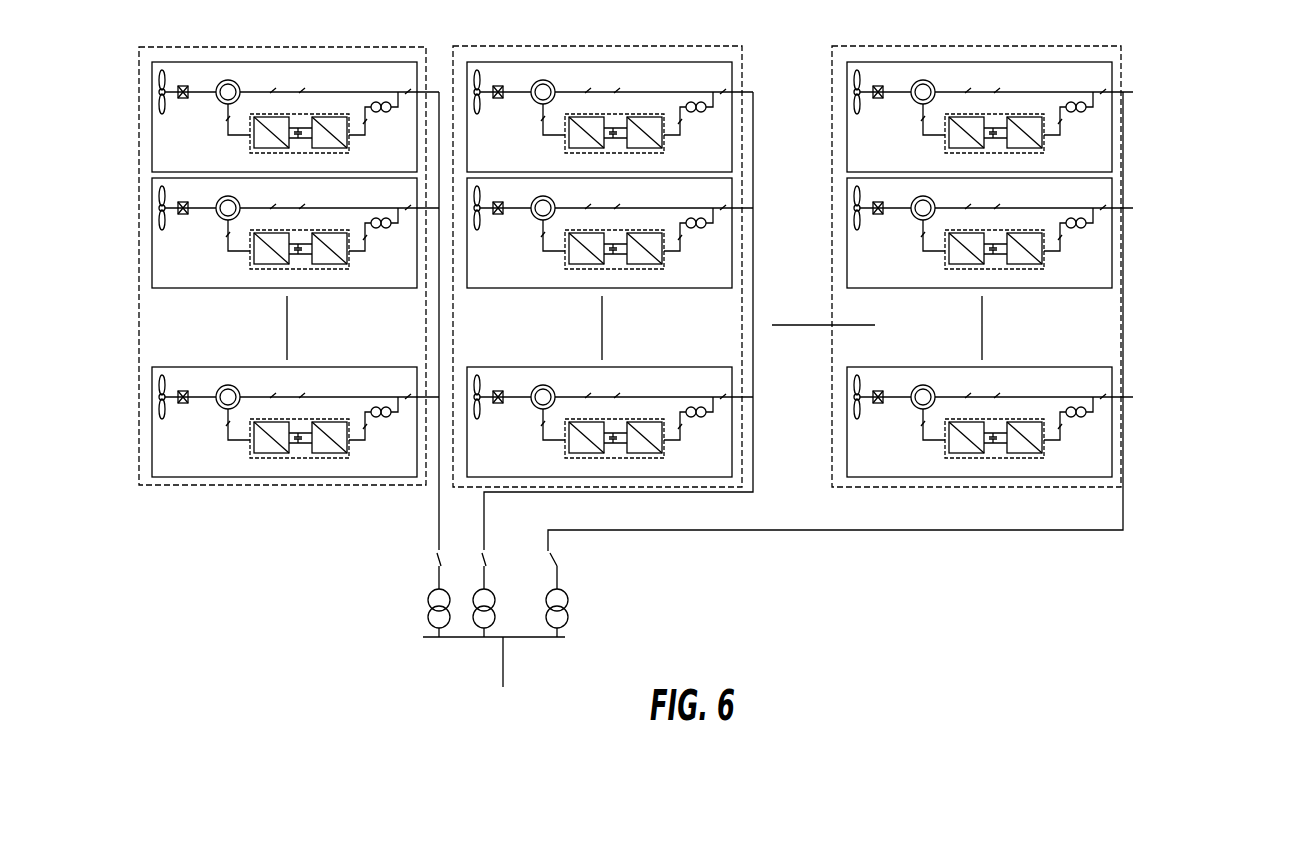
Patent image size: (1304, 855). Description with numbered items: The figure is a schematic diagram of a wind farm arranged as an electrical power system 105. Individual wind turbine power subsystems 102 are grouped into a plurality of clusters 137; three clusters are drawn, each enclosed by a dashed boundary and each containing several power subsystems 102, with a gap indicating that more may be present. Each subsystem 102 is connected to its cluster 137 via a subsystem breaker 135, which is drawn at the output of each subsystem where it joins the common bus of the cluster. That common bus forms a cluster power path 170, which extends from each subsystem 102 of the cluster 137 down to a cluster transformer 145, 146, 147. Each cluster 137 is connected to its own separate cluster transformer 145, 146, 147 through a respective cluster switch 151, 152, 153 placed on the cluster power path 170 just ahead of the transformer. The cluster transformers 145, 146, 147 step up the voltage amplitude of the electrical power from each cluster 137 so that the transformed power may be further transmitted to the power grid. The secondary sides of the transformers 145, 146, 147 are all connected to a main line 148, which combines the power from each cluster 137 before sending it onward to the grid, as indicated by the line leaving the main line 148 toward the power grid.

The electrical power system 105 is at (1212, 128).
The power subsystem 102 is at (152, 133).
The subsystem breaker 135 is at (409, 90).
The cluster 137 is at (138, 192).
The cluster power path 170 is at (440, 311).
The cluster switch 151 is at (423, 553).
The cluster switch 152 is at (472, 552).
The cluster switch 153 is at (540, 558).
The cluster transformer 145 is at (430, 600).
The cluster transformer 146 is at (489, 591).
The cluster transformer 147 is at (564, 591).
The main line 148 is at (458, 638).